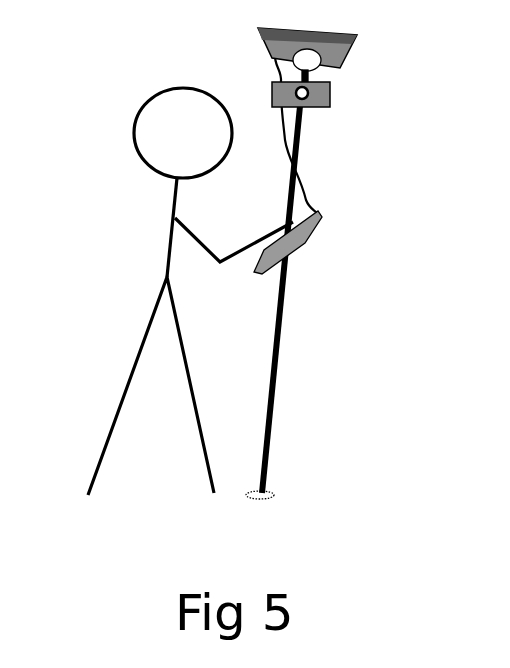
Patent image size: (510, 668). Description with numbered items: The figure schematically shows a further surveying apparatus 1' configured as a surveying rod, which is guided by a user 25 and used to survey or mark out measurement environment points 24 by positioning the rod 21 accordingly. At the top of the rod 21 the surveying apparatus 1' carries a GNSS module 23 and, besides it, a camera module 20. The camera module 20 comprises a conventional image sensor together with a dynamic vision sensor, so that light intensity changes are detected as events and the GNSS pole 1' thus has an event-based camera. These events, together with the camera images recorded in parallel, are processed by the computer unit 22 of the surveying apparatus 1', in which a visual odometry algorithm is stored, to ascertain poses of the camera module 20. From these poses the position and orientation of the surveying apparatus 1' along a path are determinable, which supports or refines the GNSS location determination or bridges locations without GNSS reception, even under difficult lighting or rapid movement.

The surveying apparatus 1' is at (299, 272).
The camera module 20 is at (333, 107).
The rod 21 is at (312, 299).
The computer unit 22 is at (311, 242).
The GNSS module 23 is at (333, 58).
The measurement environment points 24 is at (290, 503).
The user 25 is at (150, 211).